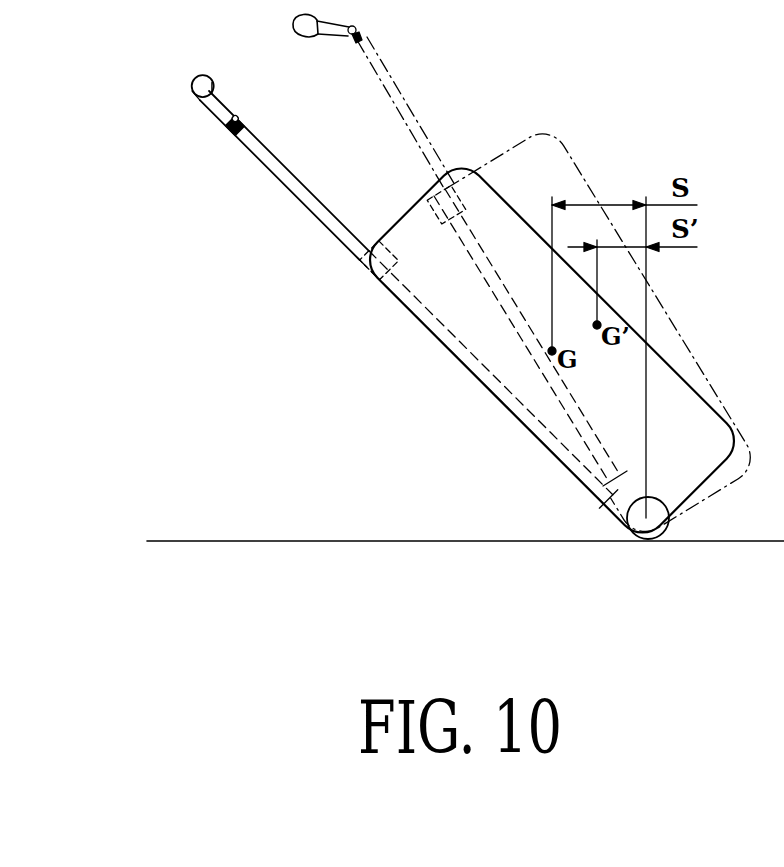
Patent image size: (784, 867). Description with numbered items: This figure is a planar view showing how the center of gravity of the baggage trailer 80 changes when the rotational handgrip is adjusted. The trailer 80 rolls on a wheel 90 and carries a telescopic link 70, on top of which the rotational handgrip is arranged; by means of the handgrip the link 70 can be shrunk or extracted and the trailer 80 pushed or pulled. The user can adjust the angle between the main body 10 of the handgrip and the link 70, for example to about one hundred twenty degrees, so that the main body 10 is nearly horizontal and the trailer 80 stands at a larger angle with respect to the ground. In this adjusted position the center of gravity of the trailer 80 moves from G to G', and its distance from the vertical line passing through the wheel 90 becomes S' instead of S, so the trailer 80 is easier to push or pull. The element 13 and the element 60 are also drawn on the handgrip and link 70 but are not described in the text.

The main body 10 is at (213, 83).
The grip neck 13 is at (232, 108).
The clip 60 is at (243, 123).
The telescopic link 70 is at (306, 191).
The baggage trailer 80 is at (654, 354).
The wheel 90 is at (648, 518).